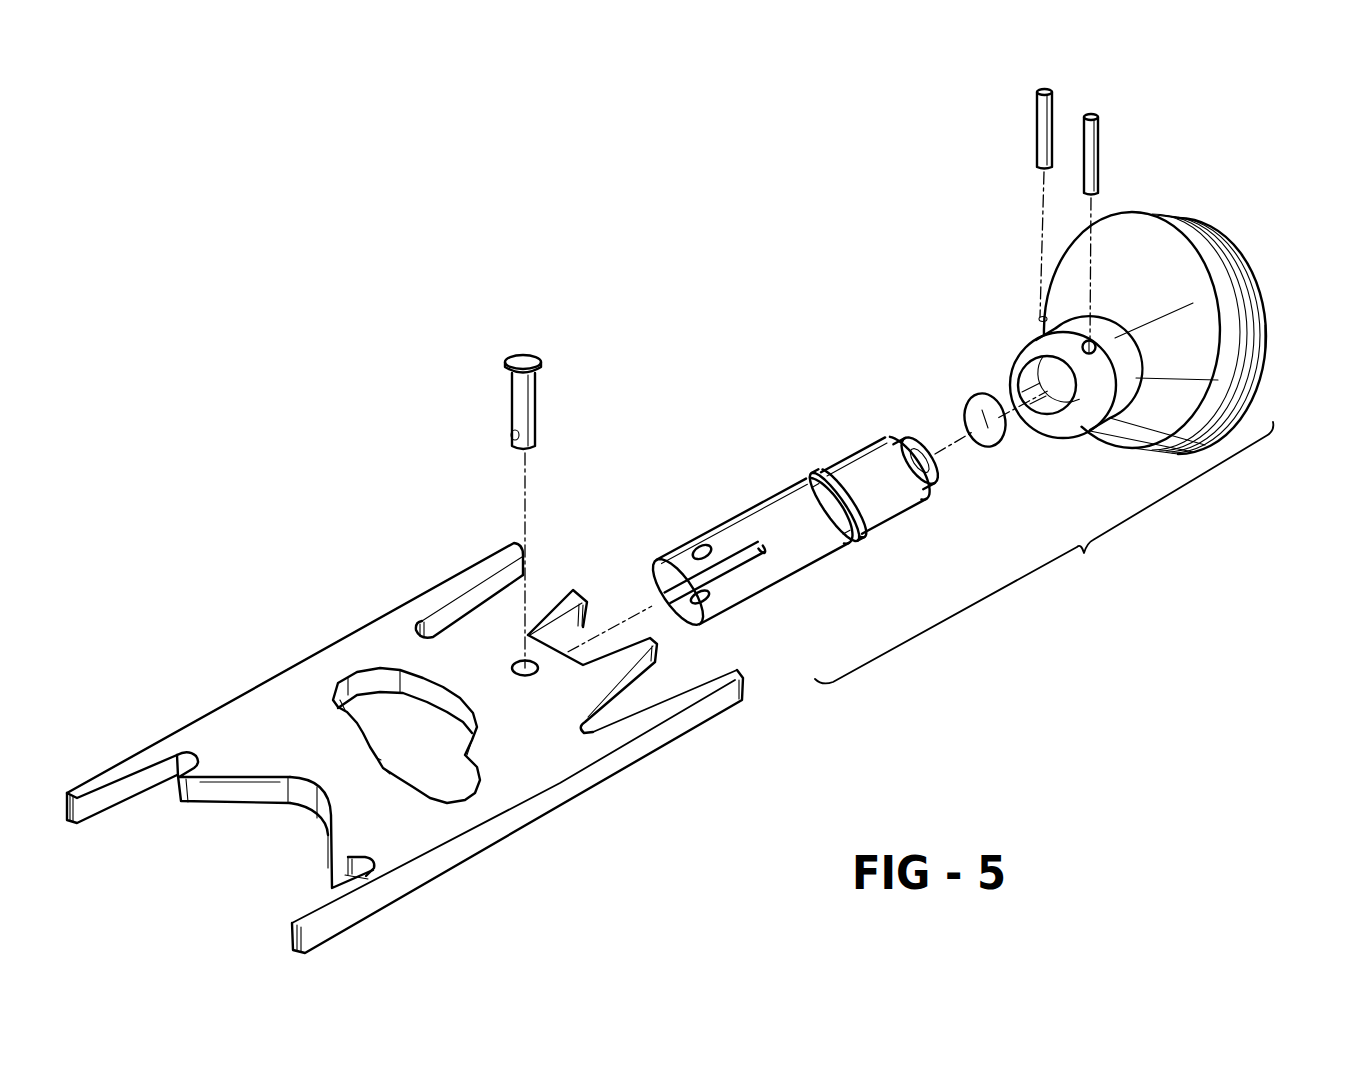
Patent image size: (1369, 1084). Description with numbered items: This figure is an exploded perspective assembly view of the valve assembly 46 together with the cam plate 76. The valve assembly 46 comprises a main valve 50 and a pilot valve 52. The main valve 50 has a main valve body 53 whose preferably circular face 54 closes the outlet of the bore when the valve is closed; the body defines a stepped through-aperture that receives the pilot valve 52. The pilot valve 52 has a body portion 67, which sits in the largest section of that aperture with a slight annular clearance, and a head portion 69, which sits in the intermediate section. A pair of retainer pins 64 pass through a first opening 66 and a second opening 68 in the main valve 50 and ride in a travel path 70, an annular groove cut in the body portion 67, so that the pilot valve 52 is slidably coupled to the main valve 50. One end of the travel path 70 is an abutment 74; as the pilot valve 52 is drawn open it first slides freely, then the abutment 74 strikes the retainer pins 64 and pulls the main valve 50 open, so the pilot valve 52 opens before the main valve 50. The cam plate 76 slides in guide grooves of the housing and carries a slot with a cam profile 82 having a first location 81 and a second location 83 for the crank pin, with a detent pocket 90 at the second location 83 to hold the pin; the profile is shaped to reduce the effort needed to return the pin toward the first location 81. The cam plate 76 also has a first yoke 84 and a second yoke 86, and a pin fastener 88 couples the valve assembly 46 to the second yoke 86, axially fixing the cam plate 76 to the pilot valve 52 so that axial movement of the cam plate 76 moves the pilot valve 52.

The valve assembly 46 is at (1044, 552).
The main valve 50 is at (1267, 341).
The pilot valve 52 is at (807, 508).
The main valve body 53 is at (1133, 255).
The face 54 is at (1176, 304).
The retainer pins 64 is at (1052, 103).
The first opening 66 is at (1046, 360).
The body portion 67 is at (728, 537).
The second opening 68 is at (1096, 345).
The head portion 69 is at (917, 448).
The travel path 70 is at (830, 492).
The abutment 74 is at (848, 533).
The cam plate 76 is at (286, 690).
The first location 81 is at (346, 727).
The cam profile 82 is at (368, 680).
The second location 83 is at (380, 770).
The first yoke 84 is at (208, 795).
The second yoke 86 is at (477, 593).
The pin fastener 88 is at (520, 403).
The detent pocket 90 is at (380, 758).